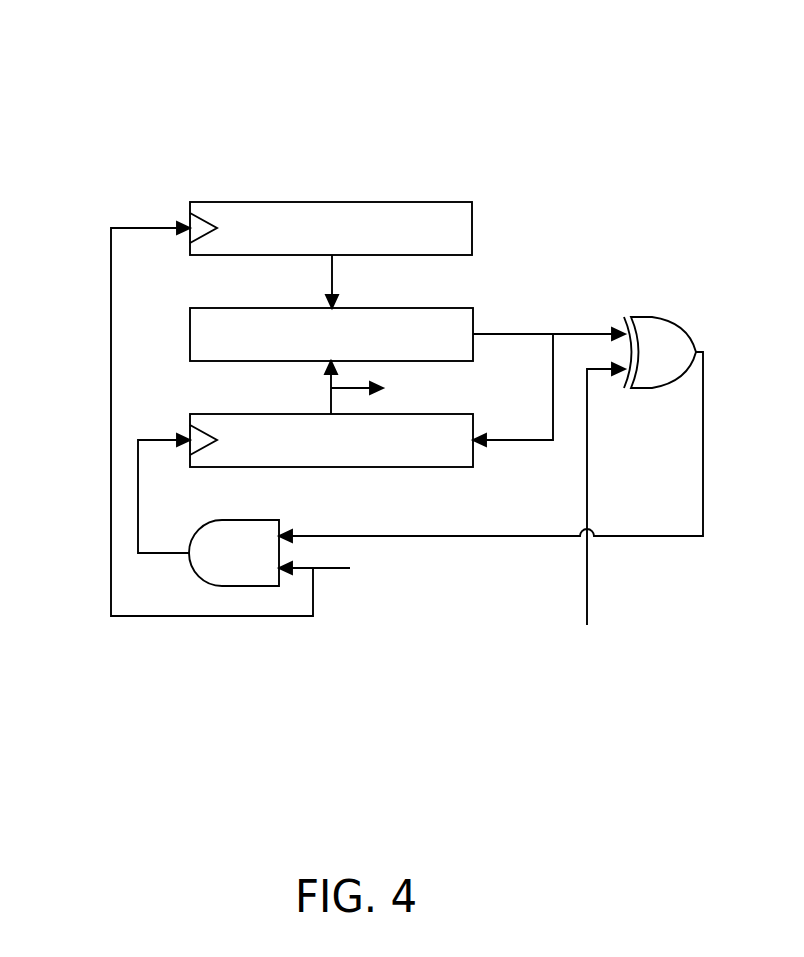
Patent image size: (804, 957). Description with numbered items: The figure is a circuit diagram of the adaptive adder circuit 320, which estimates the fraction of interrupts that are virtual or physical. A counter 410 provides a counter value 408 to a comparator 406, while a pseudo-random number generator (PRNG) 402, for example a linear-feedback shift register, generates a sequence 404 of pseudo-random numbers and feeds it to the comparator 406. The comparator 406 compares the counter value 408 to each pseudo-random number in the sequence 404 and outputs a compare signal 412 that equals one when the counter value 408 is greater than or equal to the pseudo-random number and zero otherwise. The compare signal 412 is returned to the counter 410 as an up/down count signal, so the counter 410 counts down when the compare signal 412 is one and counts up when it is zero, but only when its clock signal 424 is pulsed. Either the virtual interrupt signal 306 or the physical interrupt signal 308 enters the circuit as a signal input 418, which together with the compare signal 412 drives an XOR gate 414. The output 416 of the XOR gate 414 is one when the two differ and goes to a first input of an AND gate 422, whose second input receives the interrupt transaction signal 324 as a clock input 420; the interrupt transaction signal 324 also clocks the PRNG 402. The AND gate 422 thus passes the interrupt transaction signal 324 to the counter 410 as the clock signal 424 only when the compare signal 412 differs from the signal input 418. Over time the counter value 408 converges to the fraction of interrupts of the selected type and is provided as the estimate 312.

The adaptive adder circuit 320 is at (289, 84).
The pseudo-random number generator 402 is at (388, 242).
The sequence of pseudo-random numbers 404 is at (331, 272).
The comparator 406 is at (415, 347).
The counter value 408 is at (329, 401).
The counter 410 is at (396, 453).
The compare signal 412 is at (490, 333).
The XOR gate 414 is at (675, 363).
The output of the XOR gate 416 is at (703, 386).
The signal input 418 is at (550, 541).
The clock input 420 is at (314, 423).
The AND gate 422 is at (261, 565).
The clock signal 424 is at (139, 490).
The estimate 312 is at (415, 386).
The interrupt transaction signal 324 is at (423, 602).
The virtual interrupt signal 306 is at (549, 674).
The physical interrupt signal 308 is at (550, 709).